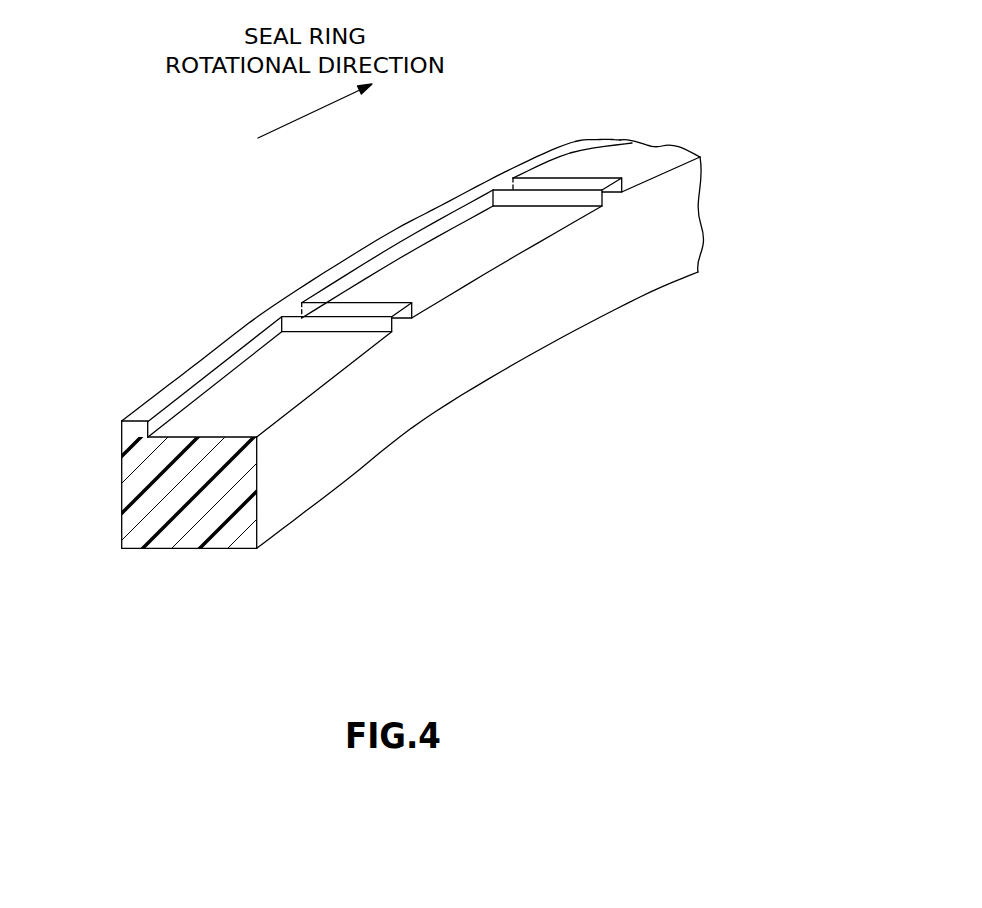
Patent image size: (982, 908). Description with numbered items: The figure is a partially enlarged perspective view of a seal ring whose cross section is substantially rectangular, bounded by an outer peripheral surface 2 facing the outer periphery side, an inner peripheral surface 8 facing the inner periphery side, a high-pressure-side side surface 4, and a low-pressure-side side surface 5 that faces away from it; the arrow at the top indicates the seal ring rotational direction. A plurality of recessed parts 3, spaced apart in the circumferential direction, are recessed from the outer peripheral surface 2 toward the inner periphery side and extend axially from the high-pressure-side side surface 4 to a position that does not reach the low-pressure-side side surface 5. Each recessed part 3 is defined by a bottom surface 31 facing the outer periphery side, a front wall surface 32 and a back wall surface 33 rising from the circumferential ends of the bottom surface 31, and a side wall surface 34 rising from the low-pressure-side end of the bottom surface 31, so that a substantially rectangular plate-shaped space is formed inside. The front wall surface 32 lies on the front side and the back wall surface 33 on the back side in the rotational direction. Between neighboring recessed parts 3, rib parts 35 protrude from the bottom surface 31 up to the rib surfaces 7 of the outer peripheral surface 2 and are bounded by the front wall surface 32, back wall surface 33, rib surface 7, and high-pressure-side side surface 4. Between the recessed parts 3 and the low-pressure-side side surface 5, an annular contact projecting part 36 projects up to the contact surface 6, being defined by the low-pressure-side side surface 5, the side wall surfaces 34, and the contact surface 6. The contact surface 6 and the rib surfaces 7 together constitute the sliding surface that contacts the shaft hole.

The outer peripheral surface 2 is at (291, 292).
The recessed parts 3 is at (450, 250).
The high-pressure-side side surface 4 is at (396, 403).
The low-pressure-side side surface 5 is at (120, 480).
The contact surface 6 is at (120, 416).
The rib surfaces 7 is at (586, 185).
The inner peripheral surface 8 is at (200, 550).
The bottom surface 31 is at (141, 415).
The front wall surface 32 is at (528, 198).
The back wall surface 33 is at (355, 303).
The side wall surface 34 is at (207, 408).
The rib parts 35 is at (441, 393).
The contact projecting part 36 is at (197, 353).